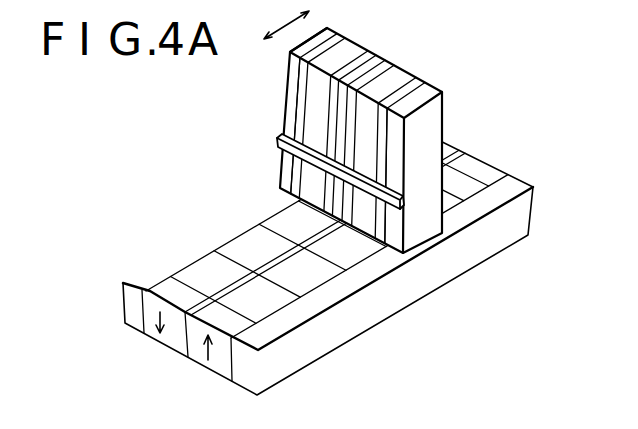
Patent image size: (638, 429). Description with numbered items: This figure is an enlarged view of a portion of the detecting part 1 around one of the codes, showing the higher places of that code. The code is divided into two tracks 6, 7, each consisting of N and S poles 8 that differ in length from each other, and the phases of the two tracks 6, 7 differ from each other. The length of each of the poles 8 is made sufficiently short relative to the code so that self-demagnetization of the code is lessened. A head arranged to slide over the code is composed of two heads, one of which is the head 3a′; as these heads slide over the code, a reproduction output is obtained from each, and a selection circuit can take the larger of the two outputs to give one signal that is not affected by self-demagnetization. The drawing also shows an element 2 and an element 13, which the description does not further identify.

The detecting part 1 is at (436, 110).
The magnet plate / yoke 2 is at (437, 275).
The head 3a′ is at (386, 224).
The track 6 is at (210, 363).
The track 7 is at (162, 338).
The poles 8 is at (308, 212).
The guide rail 13 is at (280, 137).